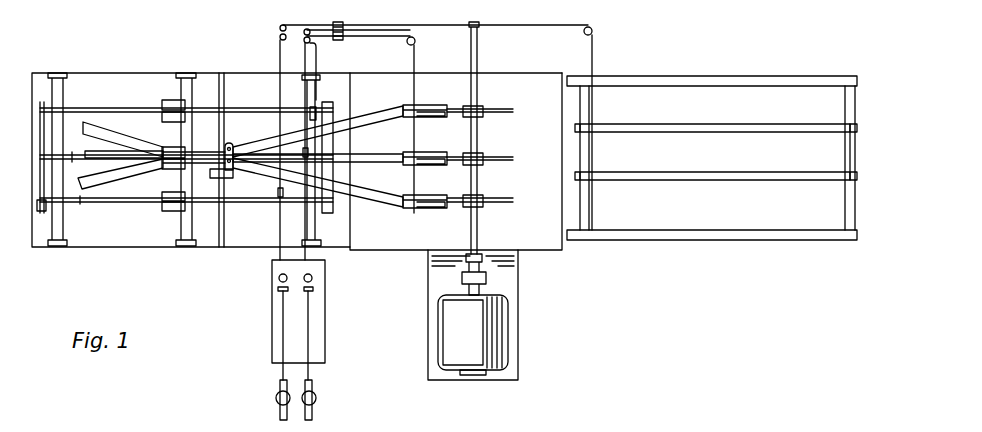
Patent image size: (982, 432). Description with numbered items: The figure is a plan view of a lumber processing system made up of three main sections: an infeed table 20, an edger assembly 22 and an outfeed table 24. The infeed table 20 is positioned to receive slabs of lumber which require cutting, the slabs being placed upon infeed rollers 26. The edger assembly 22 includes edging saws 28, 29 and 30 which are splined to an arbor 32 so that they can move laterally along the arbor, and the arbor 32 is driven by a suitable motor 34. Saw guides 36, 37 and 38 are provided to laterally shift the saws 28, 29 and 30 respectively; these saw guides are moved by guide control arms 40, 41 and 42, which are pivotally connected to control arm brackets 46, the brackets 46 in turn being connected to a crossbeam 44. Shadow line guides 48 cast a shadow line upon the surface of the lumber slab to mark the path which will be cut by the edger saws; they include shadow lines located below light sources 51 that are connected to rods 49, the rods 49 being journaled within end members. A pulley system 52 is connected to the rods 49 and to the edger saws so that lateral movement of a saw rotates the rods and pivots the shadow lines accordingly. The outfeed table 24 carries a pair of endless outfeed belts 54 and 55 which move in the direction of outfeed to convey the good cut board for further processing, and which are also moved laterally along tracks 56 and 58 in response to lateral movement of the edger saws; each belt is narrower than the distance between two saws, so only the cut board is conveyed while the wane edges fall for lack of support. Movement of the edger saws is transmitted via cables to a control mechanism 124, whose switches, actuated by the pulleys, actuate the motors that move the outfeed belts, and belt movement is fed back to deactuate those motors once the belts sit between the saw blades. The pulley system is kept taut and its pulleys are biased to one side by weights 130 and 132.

The infeed table 20 is at (118, 233).
The edger assembly 22 is at (380, 235).
The outfeed table 24 is at (635, 222).
The infeed rollers 26 is at (63, 100).
The edging saw 28 is at (455, 108).
The edging saw 29 is at (455, 155).
The edging saw 30 is at (453, 200).
The arbor 32 is at (477, 87).
The motor 34 is at (488, 340).
The saw guide 36 is at (425, 112).
The saw guide 37 is at (417, 158).
The saw guide 38 is at (417, 200).
The guide control arm 40 is at (108, 180).
The guide control arm 41 is at (110, 155).
The guide control arm 42 is at (113, 135).
The crossbeam 44 is at (222, 88).
The control arm brackets 46 is at (228, 175).
The shadow line guides 48 is at (72, 156).
The rods 49 is at (268, 107).
The light sources 51 is at (170, 102).
The pulley system 52 is at (372, 38).
The outfeed belt 54 is at (685, 130).
The outfeed belt 55 is at (688, 175).
The track 56 is at (580, 207).
The track 58 is at (850, 153).
The control mechanism 124 is at (318, 323).
The weight 130 is at (283, 404).
The weight 132 is at (315, 398).